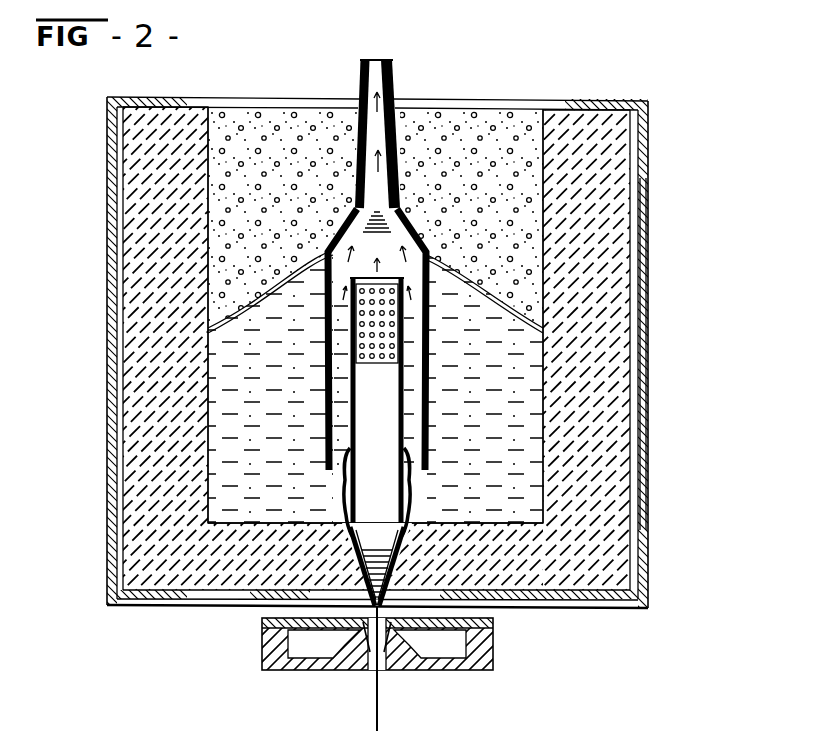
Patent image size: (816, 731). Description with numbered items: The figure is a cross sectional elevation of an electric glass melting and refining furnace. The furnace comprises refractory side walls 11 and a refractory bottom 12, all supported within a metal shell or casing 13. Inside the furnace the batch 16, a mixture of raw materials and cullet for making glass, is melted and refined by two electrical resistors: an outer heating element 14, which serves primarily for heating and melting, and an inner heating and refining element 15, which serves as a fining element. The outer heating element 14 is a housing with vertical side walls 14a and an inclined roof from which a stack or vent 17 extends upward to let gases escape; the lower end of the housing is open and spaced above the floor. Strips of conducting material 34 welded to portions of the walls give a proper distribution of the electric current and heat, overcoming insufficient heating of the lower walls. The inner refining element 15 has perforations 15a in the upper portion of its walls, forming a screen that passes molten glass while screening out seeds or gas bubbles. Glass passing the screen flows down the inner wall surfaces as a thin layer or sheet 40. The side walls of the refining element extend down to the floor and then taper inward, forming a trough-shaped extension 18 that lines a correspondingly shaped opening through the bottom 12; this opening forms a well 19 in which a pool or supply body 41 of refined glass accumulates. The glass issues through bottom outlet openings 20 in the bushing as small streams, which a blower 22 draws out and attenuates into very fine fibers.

The side walls 11 is at (612, 352).
The bottom 12 is at (508, 580).
The metal shell or casing 13 is at (636, 478).
The outer heating element 14 is at (328, 388).
The vertical side walls 14a is at (330, 440).
The inner heating and refining element 15 is at (404, 437).
The perforations 15a is at (382, 366).
The batch 16 is at (258, 140).
The stack or vent 17 is at (397, 76).
The trough-shaped extension 18 is at (288, 585).
The well 19 is at (377, 552).
The bottom outlet openings 20 is at (382, 612).
The blower 22 is at (410, 665).
The conducting material 34 is at (328, 352).
The thin layer or sheet 40 is at (356, 428).
The pool or supply body 41 is at (376, 565).